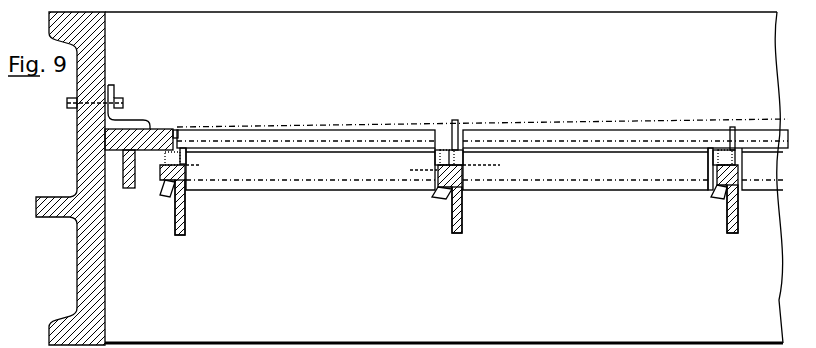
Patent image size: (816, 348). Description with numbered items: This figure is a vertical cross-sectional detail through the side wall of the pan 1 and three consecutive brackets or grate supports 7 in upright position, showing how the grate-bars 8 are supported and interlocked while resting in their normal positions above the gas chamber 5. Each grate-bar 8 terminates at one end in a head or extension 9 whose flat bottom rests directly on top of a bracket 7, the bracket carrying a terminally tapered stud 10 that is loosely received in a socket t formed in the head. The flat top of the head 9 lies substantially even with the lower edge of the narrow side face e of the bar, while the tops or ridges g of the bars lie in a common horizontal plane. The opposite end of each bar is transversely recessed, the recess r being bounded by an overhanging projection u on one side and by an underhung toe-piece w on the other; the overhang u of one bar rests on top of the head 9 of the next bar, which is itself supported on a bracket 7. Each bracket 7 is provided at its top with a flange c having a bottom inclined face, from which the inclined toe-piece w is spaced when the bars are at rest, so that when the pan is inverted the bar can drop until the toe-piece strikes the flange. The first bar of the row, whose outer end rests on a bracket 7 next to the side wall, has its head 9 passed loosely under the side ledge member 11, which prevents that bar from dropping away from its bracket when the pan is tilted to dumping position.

The pan 1 is at (78, 272).
The side ledge member 11 is at (154, 128).
The narrow intermediate face e is at (632, 150).
The tops or ridges of the grate-bars g is at (322, 126).
The grate-bar 8 is at (302, 185).
The panel top line k is at (484, 162).
The recess r is at (708, 161).
The toe-piece w is at (452, 190).
The bracket or grate support 7 is at (178, 236).
The flange c is at (165, 172).
The head or extension 9 is at (168, 160).
The overhanging projection u is at (449, 150).
The socket t is at (311, 168).
The stud or bolt 10 is at (485, 155).
The gas chamber 5 is at (303, 281).